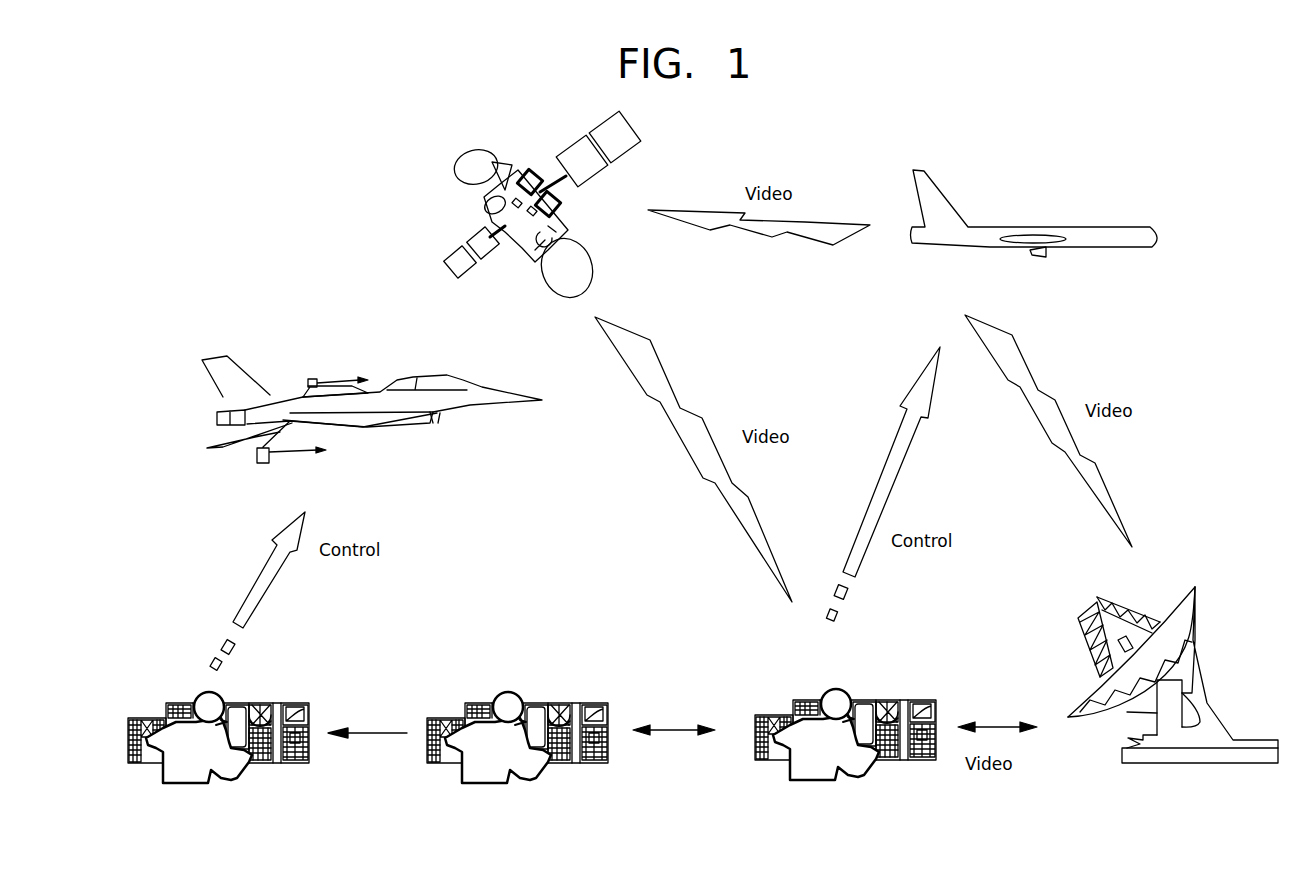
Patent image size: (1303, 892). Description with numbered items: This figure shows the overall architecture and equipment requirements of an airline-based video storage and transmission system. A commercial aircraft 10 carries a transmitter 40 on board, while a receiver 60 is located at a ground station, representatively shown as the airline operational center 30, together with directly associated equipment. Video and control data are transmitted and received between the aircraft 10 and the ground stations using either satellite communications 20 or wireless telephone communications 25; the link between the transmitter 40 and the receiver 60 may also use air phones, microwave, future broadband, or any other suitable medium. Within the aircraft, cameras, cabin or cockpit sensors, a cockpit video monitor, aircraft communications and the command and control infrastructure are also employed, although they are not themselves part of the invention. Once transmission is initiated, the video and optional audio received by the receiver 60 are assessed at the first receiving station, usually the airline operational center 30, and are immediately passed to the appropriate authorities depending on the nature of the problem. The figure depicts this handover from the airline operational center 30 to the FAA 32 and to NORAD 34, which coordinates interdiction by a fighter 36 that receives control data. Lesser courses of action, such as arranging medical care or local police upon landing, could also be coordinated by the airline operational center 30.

The commercial aircraft 10 is at (1046, 190).
The satellite communications 20 is at (468, 170).
The wireless telephone communications 25 is at (1203, 765).
The airline operational center 30 is at (812, 724).
The FAA 32 is at (579, 765).
The NORAD 34 is at (281, 768).
The fighter 36 is at (262, 396).
The transmitter 40 is at (1094, 229).
The receiver 60 is at (905, 764).